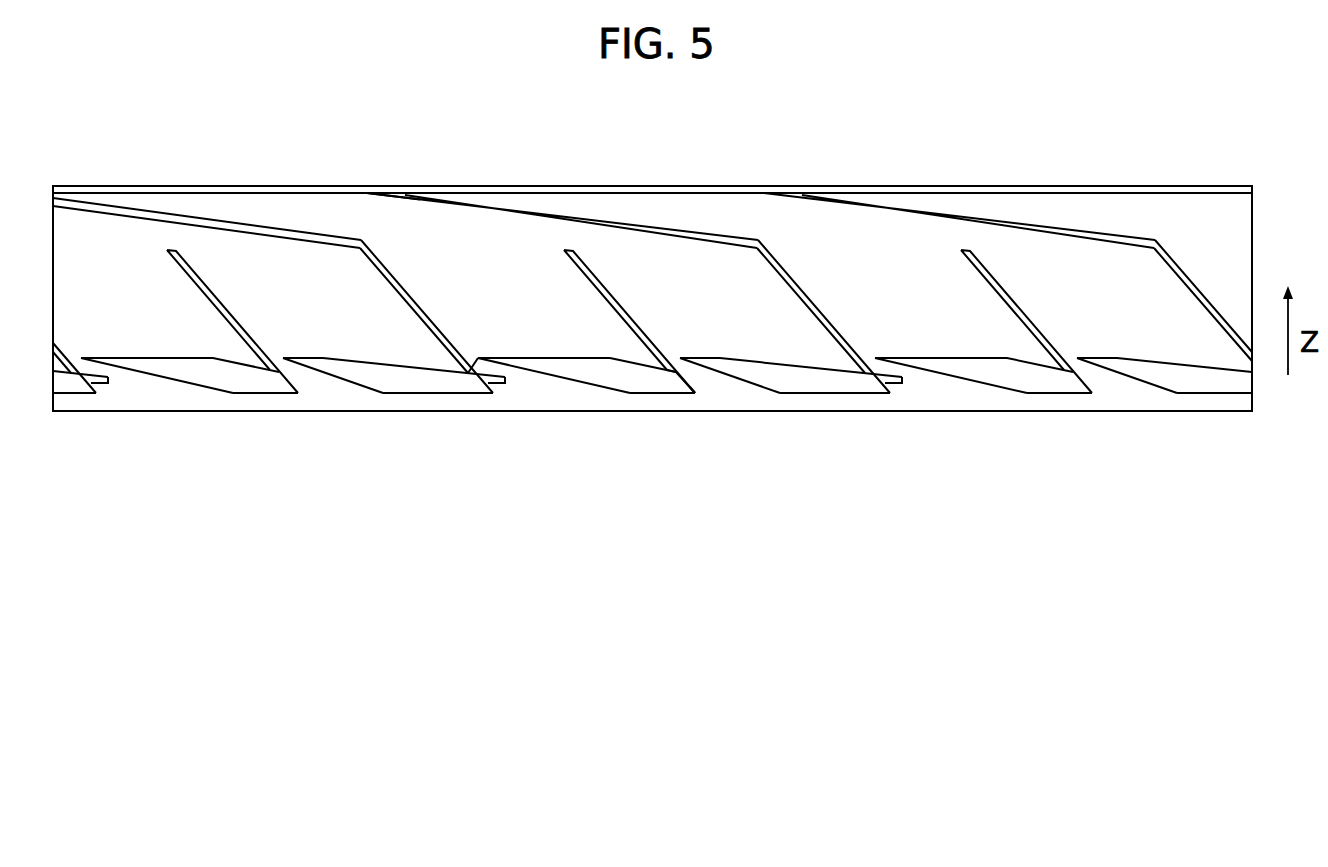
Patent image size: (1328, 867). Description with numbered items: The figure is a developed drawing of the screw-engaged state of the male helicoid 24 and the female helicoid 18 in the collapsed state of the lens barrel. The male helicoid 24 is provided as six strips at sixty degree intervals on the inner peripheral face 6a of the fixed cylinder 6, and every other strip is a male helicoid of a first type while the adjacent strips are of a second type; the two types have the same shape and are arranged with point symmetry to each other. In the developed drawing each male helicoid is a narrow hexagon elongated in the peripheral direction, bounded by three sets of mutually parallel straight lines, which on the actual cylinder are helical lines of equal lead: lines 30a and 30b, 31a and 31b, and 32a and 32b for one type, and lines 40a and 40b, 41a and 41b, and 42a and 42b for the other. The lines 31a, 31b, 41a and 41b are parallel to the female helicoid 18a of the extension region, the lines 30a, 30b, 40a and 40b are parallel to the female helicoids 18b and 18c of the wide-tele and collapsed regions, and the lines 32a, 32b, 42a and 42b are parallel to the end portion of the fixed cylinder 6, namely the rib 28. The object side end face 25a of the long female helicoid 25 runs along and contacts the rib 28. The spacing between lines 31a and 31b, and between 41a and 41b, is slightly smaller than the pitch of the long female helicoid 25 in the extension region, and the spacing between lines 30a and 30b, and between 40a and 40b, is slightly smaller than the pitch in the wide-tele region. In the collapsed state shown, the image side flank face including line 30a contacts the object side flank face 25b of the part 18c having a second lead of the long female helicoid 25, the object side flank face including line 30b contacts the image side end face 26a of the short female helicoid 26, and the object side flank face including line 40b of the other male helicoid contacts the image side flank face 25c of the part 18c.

The fixed cylinder 6 is at (1208, 422).
The inner peripheral face 6a is at (1122, 412).
The female helicoid 18 is at (652, 255).
The female helicoid of the extension region 18a is at (820, 305).
The female helicoid of the wide-tele region 18b is at (580, 215).
The part having a second lead in the collapsed region 18c is at (478, 378).
The male helicoid 24 is at (666, 414).
The long female helicoid 25 is at (652, 312).
The object side end face 25a is at (417, 193).
The object side flank face 25b is at (510, 377).
The image side flank face 25c is at (882, 392).
The short female helicoid 26 is at (629, 364).
The image side end face 26a is at (674, 372).
The rib 28 is at (1155, 188).
The straight line 30a is at (568, 382).
The straight line 30b is at (620, 358).
The straight line 31a is at (470, 367).
The straight line 31b is at (698, 390).
The straight line 32a is at (652, 392).
The straight line 32b is at (540, 357).
The straight line 40a is at (748, 385).
The straight line 40b is at (822, 370).
The straight line 41a is at (672, 367).
The straight line 41b is at (903, 384).
The straight line 42a is at (842, 394).
The straight line 42b is at (705, 358).